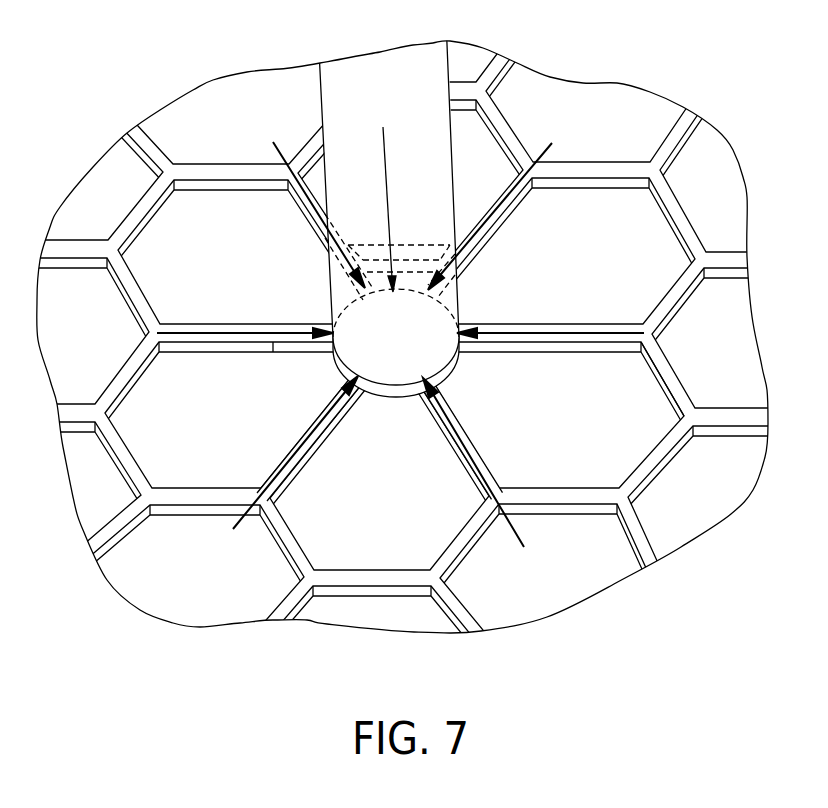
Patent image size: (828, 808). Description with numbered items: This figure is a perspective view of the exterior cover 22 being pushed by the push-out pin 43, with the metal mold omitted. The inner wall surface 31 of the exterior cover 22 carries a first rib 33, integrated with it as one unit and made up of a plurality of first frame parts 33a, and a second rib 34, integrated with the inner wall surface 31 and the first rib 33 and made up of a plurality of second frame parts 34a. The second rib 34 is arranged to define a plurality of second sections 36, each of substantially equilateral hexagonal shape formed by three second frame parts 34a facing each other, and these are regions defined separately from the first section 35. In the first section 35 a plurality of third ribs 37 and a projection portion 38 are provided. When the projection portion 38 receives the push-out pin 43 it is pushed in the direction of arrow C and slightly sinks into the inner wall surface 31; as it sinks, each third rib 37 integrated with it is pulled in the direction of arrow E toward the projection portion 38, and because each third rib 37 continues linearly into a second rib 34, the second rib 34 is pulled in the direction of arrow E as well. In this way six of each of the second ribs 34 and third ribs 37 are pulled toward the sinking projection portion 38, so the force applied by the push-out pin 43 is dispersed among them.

The exterior cover 22 is at (90, 68).
The inner wall surface 31 is at (642, 103).
The push-out pin 43 is at (400, 58).
The first section 35 is at (460, 304).
The second section 36 is at (163, 227).
The first rib 33 is at (270, 304).
The first frame part 33a is at (300, 300).
The second rib 34 is at (690, 378).
The second frame part 34a is at (185, 322).
The third rib 37 is at (491, 320).
The projection portion 38 is at (455, 254).
The arrow C is at (388, 173).
The arrow E is at (300, 193).